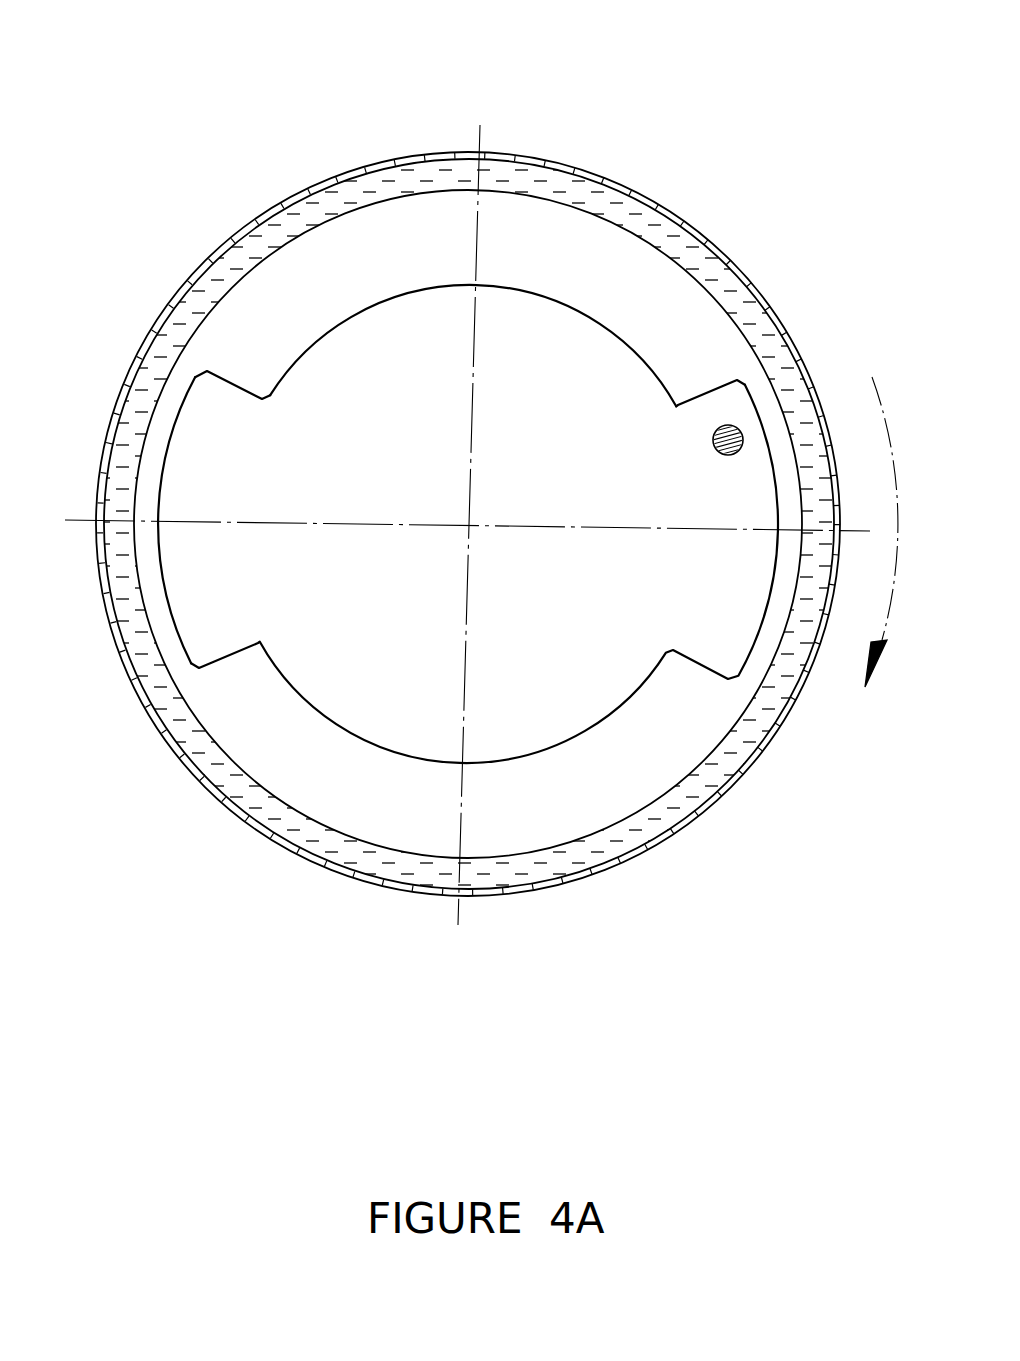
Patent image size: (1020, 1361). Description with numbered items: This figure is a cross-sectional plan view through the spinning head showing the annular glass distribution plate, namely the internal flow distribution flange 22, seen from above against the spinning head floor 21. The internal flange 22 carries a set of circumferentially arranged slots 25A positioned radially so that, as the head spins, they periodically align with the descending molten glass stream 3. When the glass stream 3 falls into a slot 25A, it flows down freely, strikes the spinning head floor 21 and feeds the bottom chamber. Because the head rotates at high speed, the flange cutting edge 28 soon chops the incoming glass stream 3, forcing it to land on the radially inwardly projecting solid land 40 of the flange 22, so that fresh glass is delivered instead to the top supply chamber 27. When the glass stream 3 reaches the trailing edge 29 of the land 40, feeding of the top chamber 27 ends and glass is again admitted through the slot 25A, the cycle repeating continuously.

The molten glass stream 3 is at (742, 428).
The spinning head floor 21 is at (713, 623).
The internal flow distribution flange 22 is at (521, 240).
The slot 25A is at (198, 473).
The top supply chamber 27 is at (225, 778).
The flange cutting edge 28 is at (722, 380).
The trailing edge 29 is at (225, 380).
The land 40 is at (372, 292).